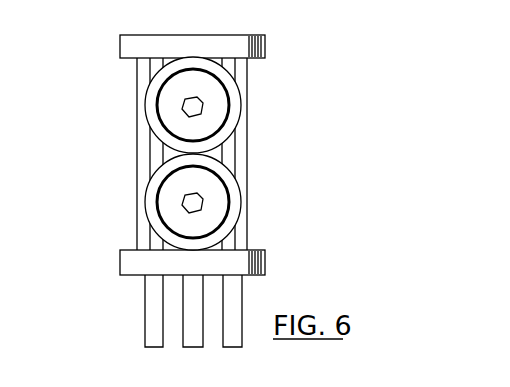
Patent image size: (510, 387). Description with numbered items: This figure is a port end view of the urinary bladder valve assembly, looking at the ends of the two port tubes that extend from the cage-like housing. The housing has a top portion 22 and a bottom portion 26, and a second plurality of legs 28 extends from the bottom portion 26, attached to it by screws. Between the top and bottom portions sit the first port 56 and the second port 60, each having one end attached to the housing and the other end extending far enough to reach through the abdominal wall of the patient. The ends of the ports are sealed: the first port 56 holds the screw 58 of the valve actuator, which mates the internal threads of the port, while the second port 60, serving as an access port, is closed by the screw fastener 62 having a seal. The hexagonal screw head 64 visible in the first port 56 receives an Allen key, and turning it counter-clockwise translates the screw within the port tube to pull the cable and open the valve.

The top portion 22 is at (137, 47).
The bottom portion 26 is at (142, 262).
The second plurality of legs 28 is at (145, 307).
The first port 56 is at (146, 191).
The screw 58 is at (176, 218).
The second port 60 is at (146, 94).
The screw fastener 62 is at (176, 122).
The screw head 64 is at (190, 108).